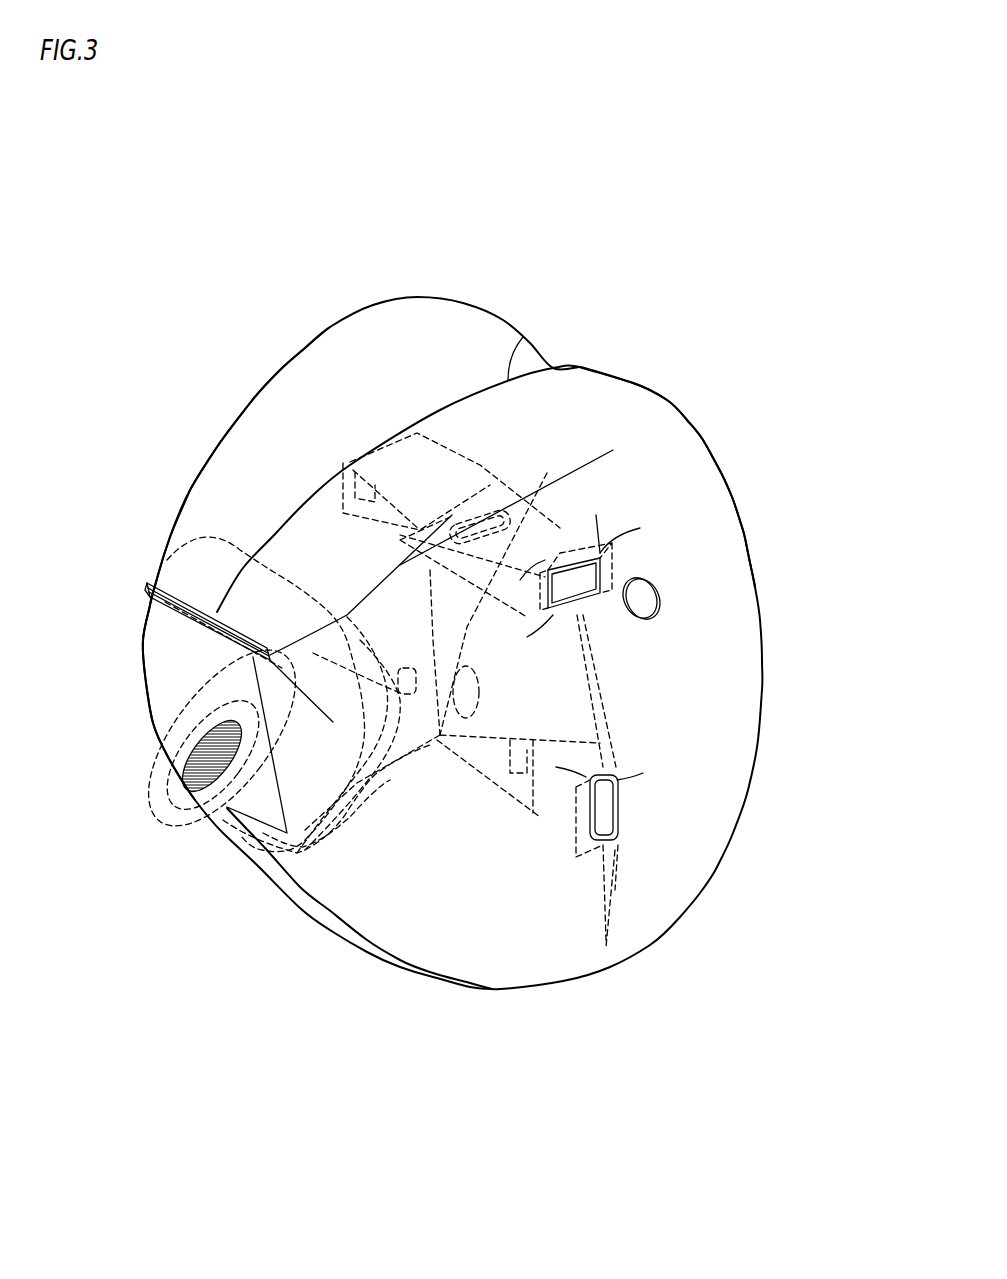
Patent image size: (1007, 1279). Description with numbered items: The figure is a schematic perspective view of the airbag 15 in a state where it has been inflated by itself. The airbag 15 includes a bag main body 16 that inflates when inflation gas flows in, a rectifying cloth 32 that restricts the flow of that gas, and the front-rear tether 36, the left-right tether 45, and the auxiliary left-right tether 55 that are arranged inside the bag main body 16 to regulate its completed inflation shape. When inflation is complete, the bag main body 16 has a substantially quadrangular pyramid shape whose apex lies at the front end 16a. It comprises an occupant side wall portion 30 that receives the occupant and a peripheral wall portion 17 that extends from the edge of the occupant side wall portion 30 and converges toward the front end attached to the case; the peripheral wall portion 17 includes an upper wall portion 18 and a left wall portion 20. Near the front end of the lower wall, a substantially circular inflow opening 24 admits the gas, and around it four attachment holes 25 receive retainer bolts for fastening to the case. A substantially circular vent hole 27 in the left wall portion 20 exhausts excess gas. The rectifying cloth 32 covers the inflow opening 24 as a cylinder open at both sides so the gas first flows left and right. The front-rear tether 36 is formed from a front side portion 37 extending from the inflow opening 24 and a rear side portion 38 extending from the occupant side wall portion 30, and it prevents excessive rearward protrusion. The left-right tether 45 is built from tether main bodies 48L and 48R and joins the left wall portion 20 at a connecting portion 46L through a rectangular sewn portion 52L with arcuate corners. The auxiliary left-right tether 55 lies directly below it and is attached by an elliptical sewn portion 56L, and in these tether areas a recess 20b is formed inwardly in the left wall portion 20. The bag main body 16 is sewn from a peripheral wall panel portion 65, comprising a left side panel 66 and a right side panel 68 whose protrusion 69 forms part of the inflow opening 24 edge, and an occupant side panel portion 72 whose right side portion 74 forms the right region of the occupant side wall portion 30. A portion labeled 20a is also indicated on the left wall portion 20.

The airbag 15 is at (752, 216).
The bag main body 16 is at (290, 290).
The peripheral wall portion 17 is at (210, 440).
The upper wall portion 18 is at (350, 368).
The right side portion 74 is at (552, 302).
The occupant side panel portion 72 is at (532, 352).
The occupant side wall portion 30 is at (645, 378).
The tether main body 48R is at (445, 448).
The left-right tether 45 is at (490, 470).
The right side panel 68 is at (200, 523).
The left side panel 66 is at (407, 954).
The peripheral wall panel portion 65 is at (520, 967).
The rectifying cloth 32 is at (283, 565).
The tether main body 48L is at (566, 523).
The cover first portion 20a is at (620, 535).
The vent hole 27 is at (655, 597).
The front end 16a is at (160, 634).
The connecting portion 46L is at (585, 622).
The sewn portion 52L is at (560, 617).
The sewn portion 56L is at (615, 775).
The attachment hole 25 is at (178, 712).
The inflow opening 24 is at (200, 765).
The protrusion 69 is at (262, 807).
The front-rear tether 36 is at (395, 795).
The front side portion 37 is at (403, 745).
The rear side portion 38 is at (510, 725).
The auxiliary left-right tether 55 is at (533, 802).
The recess 20b is at (632, 815).
The left wall portion 20 is at (645, 908).